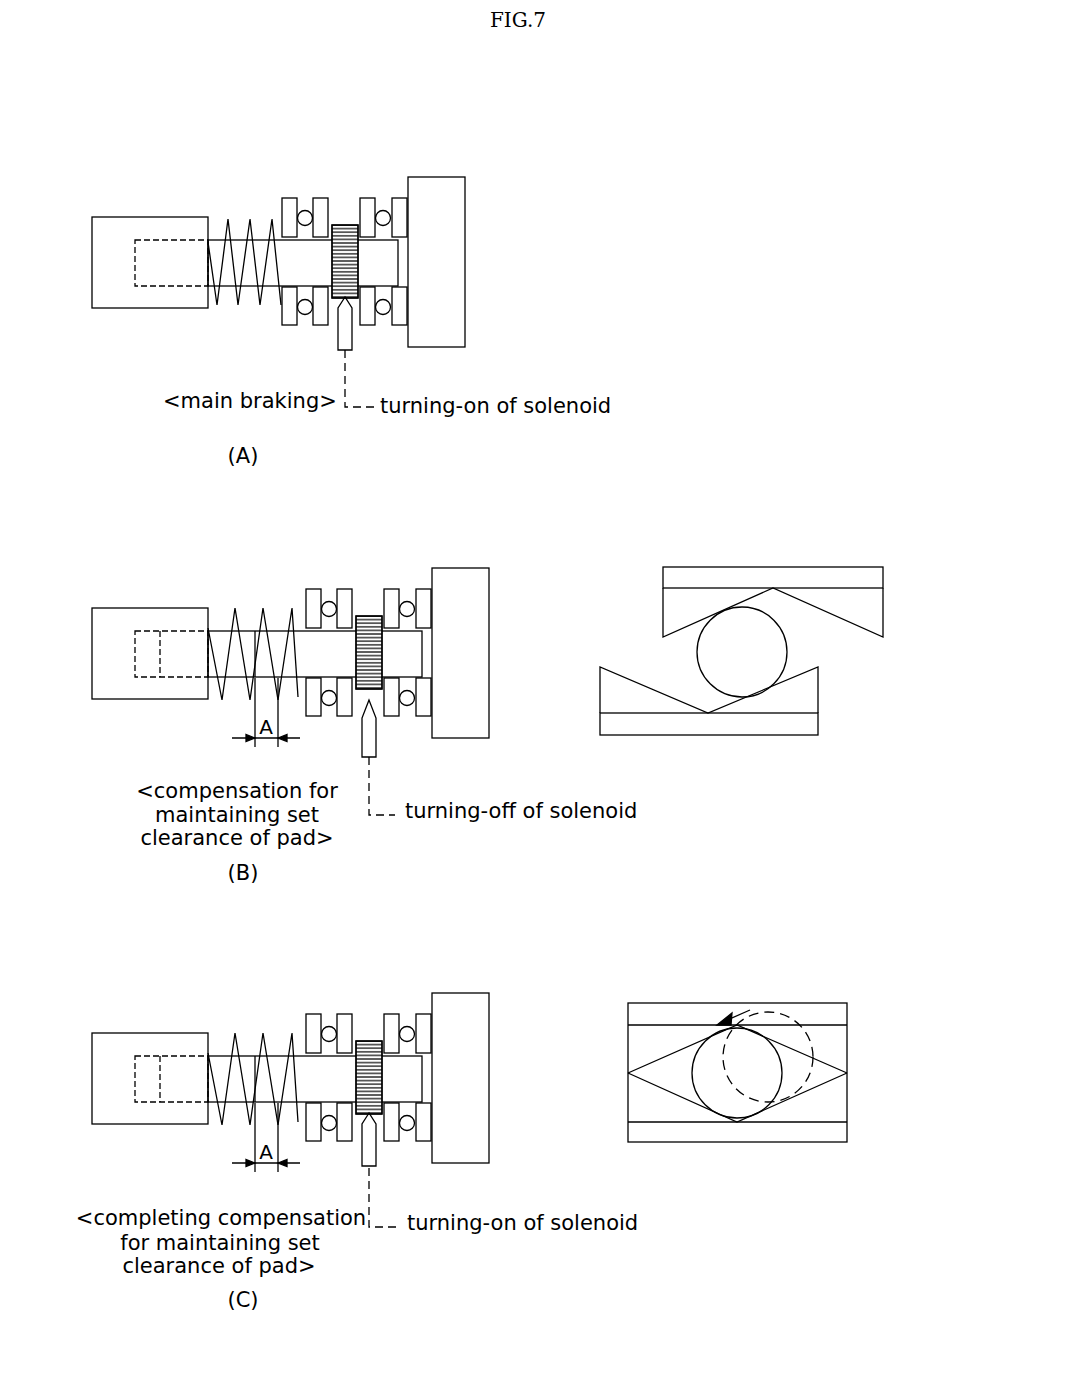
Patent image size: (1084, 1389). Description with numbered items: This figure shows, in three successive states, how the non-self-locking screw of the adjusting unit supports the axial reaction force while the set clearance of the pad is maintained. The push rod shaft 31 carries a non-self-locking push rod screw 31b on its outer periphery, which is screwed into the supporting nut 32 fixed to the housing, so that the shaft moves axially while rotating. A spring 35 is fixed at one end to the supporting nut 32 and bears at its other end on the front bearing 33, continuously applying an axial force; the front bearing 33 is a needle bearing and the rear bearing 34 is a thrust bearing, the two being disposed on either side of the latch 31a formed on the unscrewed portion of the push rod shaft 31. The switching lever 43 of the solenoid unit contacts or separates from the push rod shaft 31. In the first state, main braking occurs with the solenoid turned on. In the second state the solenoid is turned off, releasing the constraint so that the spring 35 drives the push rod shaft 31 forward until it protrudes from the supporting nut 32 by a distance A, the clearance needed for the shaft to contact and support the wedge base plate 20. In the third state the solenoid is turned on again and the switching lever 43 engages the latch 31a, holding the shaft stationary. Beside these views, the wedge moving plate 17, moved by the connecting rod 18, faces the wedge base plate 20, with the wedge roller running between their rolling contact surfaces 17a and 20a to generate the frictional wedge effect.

The wedge moving plate 17 is at (883, 588).
The rolling contact surface 17a is at (838, 620).
The connecting rod 18 is at (712, 655).
The wedge base plate 20 is at (456, 313).
The rolling contact surface 20a is at (800, 667).
The push rod shaft 31 is at (272, 149).
The latch 31a is at (340, 236).
The push rod screw 31b is at (259, 245).
The supporting nut 32 is at (137, 309).
The front bearing 33 is at (320, 203).
The rear bearing 34 is at (368, 203).
The spring 35 is at (238, 311).
The switching lever 43 is at (351, 345).